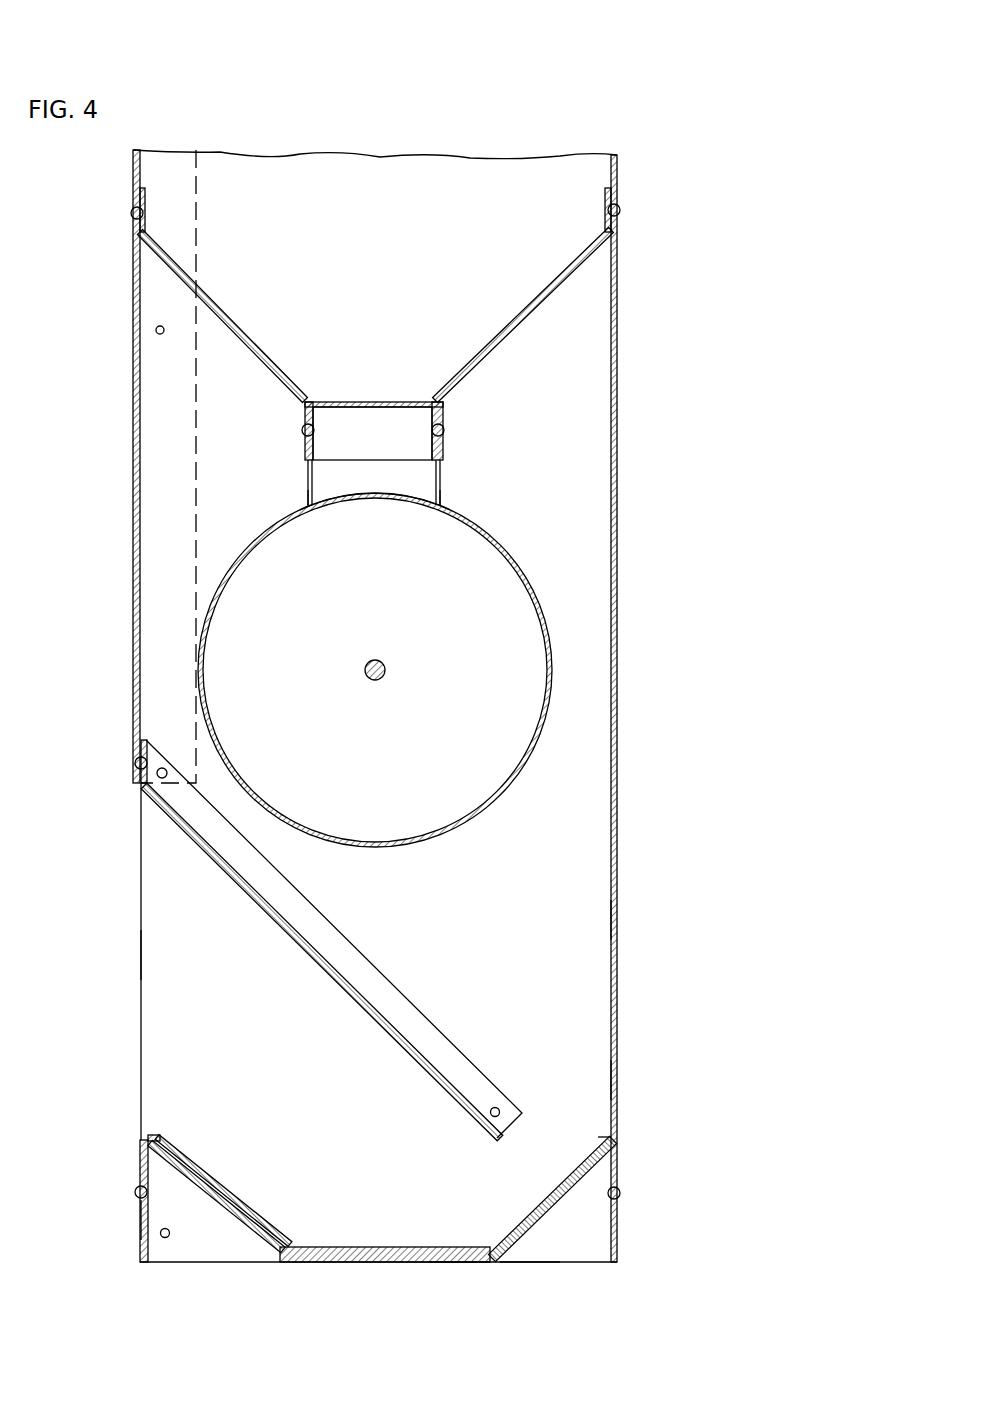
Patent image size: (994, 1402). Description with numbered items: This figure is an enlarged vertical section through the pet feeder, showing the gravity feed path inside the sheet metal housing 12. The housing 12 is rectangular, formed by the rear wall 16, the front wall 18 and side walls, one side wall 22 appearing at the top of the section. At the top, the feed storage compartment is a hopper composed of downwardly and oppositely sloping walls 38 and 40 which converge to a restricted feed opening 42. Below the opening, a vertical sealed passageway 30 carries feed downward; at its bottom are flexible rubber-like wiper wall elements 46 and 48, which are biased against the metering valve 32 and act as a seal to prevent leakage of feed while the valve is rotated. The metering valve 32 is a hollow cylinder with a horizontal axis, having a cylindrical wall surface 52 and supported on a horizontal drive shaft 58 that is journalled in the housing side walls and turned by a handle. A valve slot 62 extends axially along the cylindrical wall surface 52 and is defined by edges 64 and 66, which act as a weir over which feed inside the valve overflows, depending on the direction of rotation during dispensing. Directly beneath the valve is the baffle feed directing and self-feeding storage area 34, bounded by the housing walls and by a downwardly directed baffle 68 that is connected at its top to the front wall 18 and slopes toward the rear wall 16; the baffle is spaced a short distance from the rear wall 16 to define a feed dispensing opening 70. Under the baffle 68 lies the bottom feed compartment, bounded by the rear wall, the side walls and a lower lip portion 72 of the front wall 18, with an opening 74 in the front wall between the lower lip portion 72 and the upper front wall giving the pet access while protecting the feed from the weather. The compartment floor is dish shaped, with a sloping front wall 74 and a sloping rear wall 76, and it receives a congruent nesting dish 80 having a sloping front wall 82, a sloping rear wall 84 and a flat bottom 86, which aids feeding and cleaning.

The housing 12 is at (614, 262).
The rear wall 16 is at (618, 386).
The front wall 18 is at (133, 556).
The side wall 22 is at (346, 178).
The sealed passageway 30 is at (412, 414).
The metering valve 32 is at (555, 652).
The baffle feed directing and self-feeding storage area 34 is at (584, 942).
The sloping wall 38 is at (200, 296).
The sloping wall 40 is at (575, 258).
The restricted feed opening 42 is at (338, 400).
The wiper wall element 46 is at (305, 468).
The wiper wall element 48 is at (440, 470).
The cylindrical wall surface 52 is at (538, 590).
The drive shaft 58 is at (383, 678).
The valve slot 62 is at (372, 496).
The slot edge 64 is at (310, 506).
The slot edge 66 is at (440, 506).
The baffle 68 is at (328, 960).
The feed dispensing opening 70 is at (592, 1097).
The lower lip portion 72 is at (141, 1226).
The opening / sloping front wall 74 is at (141, 966).
The sloping rear wall 76 is at (522, 1232).
The dish 80 is at (330, 1246).
The sloping front wall 82 is at (190, 1165).
The sloping rear wall 84 is at (568, 1172).
The flat bottom 86 is at (445, 1248).